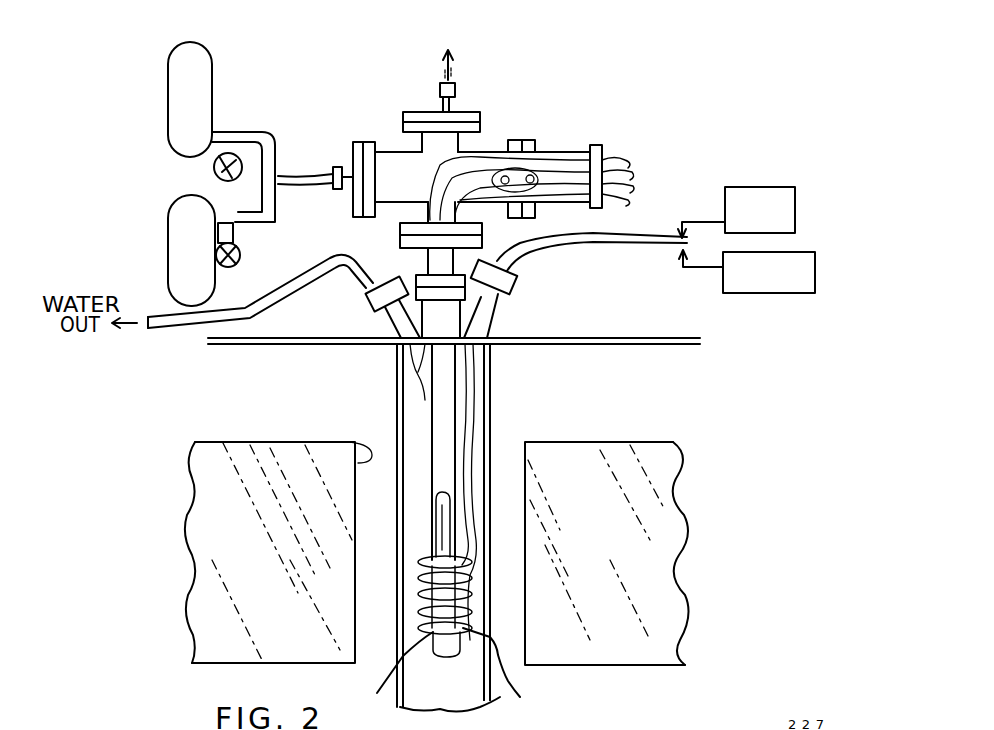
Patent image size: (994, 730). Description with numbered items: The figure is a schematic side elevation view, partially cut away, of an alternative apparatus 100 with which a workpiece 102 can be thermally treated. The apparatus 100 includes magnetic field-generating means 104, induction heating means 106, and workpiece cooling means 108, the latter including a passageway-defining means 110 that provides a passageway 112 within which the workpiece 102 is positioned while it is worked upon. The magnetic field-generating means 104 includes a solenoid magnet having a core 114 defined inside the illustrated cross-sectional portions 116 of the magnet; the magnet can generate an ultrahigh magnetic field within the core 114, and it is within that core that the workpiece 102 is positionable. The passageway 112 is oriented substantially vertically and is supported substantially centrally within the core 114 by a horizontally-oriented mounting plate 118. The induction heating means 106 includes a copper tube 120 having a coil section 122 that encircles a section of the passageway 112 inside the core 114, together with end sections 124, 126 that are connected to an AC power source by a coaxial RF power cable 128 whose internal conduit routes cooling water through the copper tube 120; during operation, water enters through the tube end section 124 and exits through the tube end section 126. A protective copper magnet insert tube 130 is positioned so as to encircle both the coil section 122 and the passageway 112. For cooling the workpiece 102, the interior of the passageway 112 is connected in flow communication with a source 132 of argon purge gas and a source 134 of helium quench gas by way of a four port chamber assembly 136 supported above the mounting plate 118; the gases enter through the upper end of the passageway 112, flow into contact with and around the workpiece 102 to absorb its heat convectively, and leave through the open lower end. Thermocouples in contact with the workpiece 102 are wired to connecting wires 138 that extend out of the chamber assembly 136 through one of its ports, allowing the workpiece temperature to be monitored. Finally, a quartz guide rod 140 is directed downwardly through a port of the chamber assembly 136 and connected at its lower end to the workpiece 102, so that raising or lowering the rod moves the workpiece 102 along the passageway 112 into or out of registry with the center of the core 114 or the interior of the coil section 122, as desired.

The apparatus 100 is at (638, 83).
The workpiece 102 is at (400, 707).
The magnetic field-generating means 104 is at (693, 416).
The heating means 106 is at (709, 165).
The workpiece cooling means 108 is at (247, 48).
The passageway-defining means 110 is at (527, 384).
The passageway 112 is at (430, 407).
The core 114 is at (357, 463).
The cross-sectional portions 116 is at (220, 620).
The mounting plate 118 is at (607, 332).
The copper tube 120 is at (497, 688).
The coil section 122 is at (423, 595).
The end section 124 is at (413, 362).
The end section 126 is at (470, 358).
The coaxial RF power cable 128 is at (640, 249).
The protective copper magnet insert tube 130 is at (490, 425).
The source of argon purge gas 132 is at (168, 223).
The source of helium quench gas 134 is at (168, 115).
The four port chamber assembly 136 is at (397, 148).
The connecting wires 138 is at (610, 157).
The quartz guide rod 140 is at (455, 103).